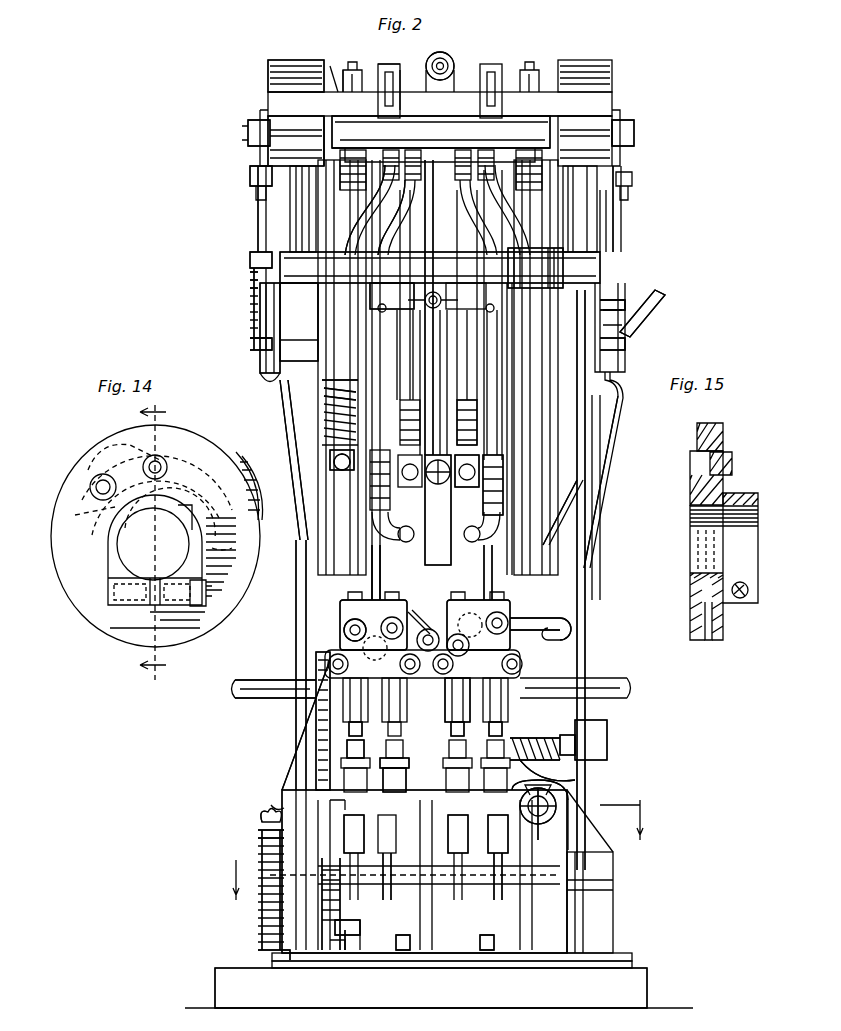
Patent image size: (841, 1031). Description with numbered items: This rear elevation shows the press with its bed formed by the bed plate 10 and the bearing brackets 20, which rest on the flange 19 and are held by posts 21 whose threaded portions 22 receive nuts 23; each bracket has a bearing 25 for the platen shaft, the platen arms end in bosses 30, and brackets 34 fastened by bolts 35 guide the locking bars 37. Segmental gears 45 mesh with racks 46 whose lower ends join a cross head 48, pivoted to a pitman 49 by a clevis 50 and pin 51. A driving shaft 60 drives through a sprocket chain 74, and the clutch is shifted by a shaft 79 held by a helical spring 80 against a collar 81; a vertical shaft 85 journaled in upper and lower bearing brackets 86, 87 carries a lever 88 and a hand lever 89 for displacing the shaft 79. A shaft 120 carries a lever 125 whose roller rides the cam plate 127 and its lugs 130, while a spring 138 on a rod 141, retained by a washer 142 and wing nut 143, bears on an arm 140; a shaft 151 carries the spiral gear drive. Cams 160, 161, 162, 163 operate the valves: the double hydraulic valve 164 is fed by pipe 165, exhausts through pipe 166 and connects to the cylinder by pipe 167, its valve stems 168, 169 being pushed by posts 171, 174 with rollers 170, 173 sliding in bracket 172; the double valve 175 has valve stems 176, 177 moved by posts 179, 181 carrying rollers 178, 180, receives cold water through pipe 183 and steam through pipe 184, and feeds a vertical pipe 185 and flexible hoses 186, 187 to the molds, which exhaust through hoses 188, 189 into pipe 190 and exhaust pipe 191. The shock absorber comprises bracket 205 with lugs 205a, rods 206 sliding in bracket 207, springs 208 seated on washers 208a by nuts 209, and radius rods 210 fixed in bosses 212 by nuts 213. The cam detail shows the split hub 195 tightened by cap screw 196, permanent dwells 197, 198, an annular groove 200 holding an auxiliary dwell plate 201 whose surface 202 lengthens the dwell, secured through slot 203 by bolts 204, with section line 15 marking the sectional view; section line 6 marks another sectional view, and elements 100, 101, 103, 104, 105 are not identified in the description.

In FIG. 2, the bed plate 10 is at (615, 970).
In FIG. 2, the flange 19 is at (282, 296).
In FIG. 2, the bearing bracket 20 is at (268, 80).
In FIG. 2, the post 21 is at (258, 205).
In FIG. 2, the threaded portion 22 is at (283, 382).
In FIG. 2, the nut 23 is at (262, 360).
In FIG. 2, the bearing 25 is at (280, 120).
In FIG. 2, the boss 30 is at (389, 64).
In FIG. 2, the bracket 34 is at (332, 68).
In FIG. 2, the bolt 35 is at (352, 64).
In FIG. 2, the locking bar 37 is at (605, 106).
In FIG. 2, the segmental gear 45 is at (362, 158).
In FIG. 2, the rack 46 is at (352, 170).
In FIG. 2, the cross head 48 is at (478, 418).
In FIG. 2, the pitman 49 is at (438, 510).
In FIG. 2, the clevis 50 is at (503, 500).
In FIG. 2, the pin 51 is at (480, 468).
In FIG. 2, the driving shaft 60 is at (254, 680).
In FIG. 2, the sprocket chain 74 is at (316, 734).
In FIG. 2, the shaft 79 is at (568, 780).
In FIG. 2, the helical compression spring 80 is at (545, 740).
In FIG. 2, the collar 81 is at (560, 720).
In FIG. 2, the vertically disposed shaft 85 is at (600, 526).
In FIG. 2, the upper bearing bracket 86 is at (570, 375).
In FIG. 2, the lower bearing bracket 87 is at (607, 730).
In FIG. 2, the lever 88 is at (607, 750).
In FIG. 2, the hand lever 89 is at (652, 300).
In FIG. 2, the bolt 100 is at (248, 130).
In FIG. 2, the nut 101 is at (250, 176).
In FIG. 2, the nut 103 is at (252, 326).
In FIG. 2, the threaded rod 104 is at (254, 278).
In FIG. 2, the nut 105 is at (250, 258).
In FIG. 2, the shaft 120 is at (352, 950).
In FIG. 2, the lever 125 is at (360, 935).
In FIG. 2, the cam plate 127 is at (335, 925).
In FIG. 2, the lug 130 is at (338, 950).
In FIG. 2, the helical compression spring 138 is at (260, 840).
In FIG. 2, the arm 140 is at (258, 952).
In FIG. 2, the rod 141 is at (258, 852).
In FIG. 2, the washer 142 is at (262, 826).
In FIG. 2, the wing nut 143 is at (262, 818).
In FIG. 2, the shaft 151 is at (557, 800).
In FIG. 2, the cam 160 is at (322, 876).
In FIG. 2, the cam 161 is at (392, 900).
In FIG. 2, the cam 162 is at (420, 935).
In FIG. 2, the cam 163 is at (494, 905).
In FIG. 2, the double hydraulic valve 164 is at (510, 644).
In FIG. 2, the pipe 165 is at (520, 612).
In FIG. 2, the exhaust pipe 166 is at (470, 664).
In FIG. 2, the pipe 167 is at (566, 620).
In FIG. 2, the valve stem 168 is at (451, 724).
In FIG. 2, the valve stem 169 is at (489, 728).
In FIG. 2, the anti-friction roller 170 is at (490, 828).
In FIG. 2, the post 171 is at (458, 815).
In FIG. 2, the bracket 172 is at (282, 800).
In FIG. 2, the anti-friction roller 173 is at (503, 870).
In FIG. 2, the post 174 is at (540, 840).
In FIG. 2, the double valve 175 is at (370, 598).
In FIG. 2, the valve stem 176 is at (364, 748).
In FIG. 2, the valve stem 177 is at (362, 728).
In FIG. 2, the anti-friction roller 178 is at (344, 830).
In FIG. 2, the post 179 is at (326, 792).
In FIG. 2, the anti-friction roller 180 is at (406, 790).
In FIG. 2, the post 181 is at (412, 766).
In FIG. 2, the pipe 183 is at (396, 604).
In FIG. 2, the pipe 184 is at (345, 632).
In FIG. 2, the vertically disposed pipe 185 is at (387, 572).
In FIG. 2, the flexible hose 186 is at (380, 310).
In FIG. 2, the flexible hose 187 is at (430, 280).
In FIG. 2, the flexible hose 188 is at (458, 190).
In FIG. 2, the flexible hose 189 is at (470, 220).
In FIG. 2, the vertically disposed pipe 190 is at (470, 575).
In FIG. 2, the exhaust pipe 191 is at (470, 586).
In FIG. 15, the split hub 195 is at (740, 494).
In FIG. 14, the cap screw 196 is at (205, 612).
In FIG. 15, the cap screw 196 is at (750, 590).
In FIG. 14, the dwell 197 is at (134, 430).
In FIG. 15, the dwell 197 is at (700, 420).
In FIG. 14, the dwell 198 is at (106, 640).
In FIG. 15, the dwell 198 is at (712, 640).
In FIG. 15, the annular groove 200 is at (714, 620).
In FIG. 14, the auxiliary dwell plate 201 is at (262, 462).
In FIG. 15, the auxiliary dwell plate 201 is at (724, 446).
In FIG. 14, the surface 202 is at (240, 458).
In FIG. 14, the slot 203 is at (100, 438).
In FIG. 14, the bolt 204 is at (96, 482).
In FIG. 15, the bolt 204 is at (734, 456).
In FIG. 2, the bracket 205 is at (430, 120).
In FIG. 2, the lug 205a is at (404, 72).
In FIG. 2, the rod 206 is at (540, 170).
In FIG. 2, the bracket 207 is at (580, 260).
In FIG. 2, the helical compression spring 208 is at (322, 400).
In FIG. 2, the washer 208a is at (336, 462).
In FIG. 2, the nut 209 is at (338, 455).
In FIG. 2, the radius rod 210 is at (586, 664).
In FIG. 2, the boss 212 is at (262, 330).
In FIG. 2, the nut 213 is at (262, 300).
In FIG. 2, the section line 6 is at (438, 850).
In FIG. 14, the section line 15 is at (145, 540).